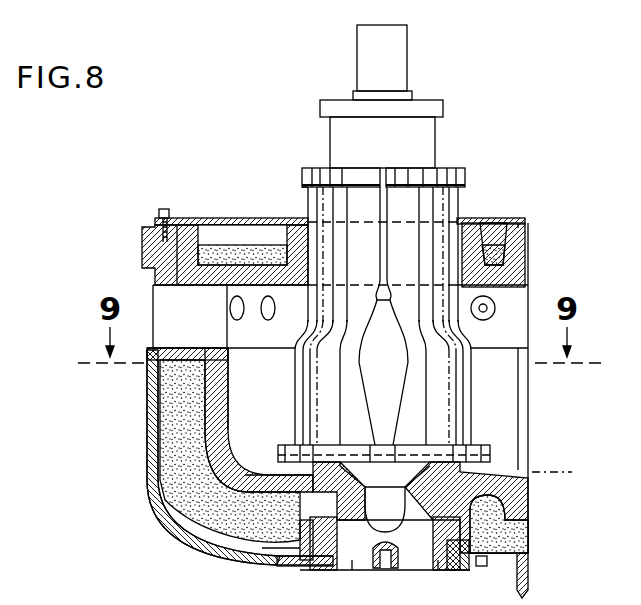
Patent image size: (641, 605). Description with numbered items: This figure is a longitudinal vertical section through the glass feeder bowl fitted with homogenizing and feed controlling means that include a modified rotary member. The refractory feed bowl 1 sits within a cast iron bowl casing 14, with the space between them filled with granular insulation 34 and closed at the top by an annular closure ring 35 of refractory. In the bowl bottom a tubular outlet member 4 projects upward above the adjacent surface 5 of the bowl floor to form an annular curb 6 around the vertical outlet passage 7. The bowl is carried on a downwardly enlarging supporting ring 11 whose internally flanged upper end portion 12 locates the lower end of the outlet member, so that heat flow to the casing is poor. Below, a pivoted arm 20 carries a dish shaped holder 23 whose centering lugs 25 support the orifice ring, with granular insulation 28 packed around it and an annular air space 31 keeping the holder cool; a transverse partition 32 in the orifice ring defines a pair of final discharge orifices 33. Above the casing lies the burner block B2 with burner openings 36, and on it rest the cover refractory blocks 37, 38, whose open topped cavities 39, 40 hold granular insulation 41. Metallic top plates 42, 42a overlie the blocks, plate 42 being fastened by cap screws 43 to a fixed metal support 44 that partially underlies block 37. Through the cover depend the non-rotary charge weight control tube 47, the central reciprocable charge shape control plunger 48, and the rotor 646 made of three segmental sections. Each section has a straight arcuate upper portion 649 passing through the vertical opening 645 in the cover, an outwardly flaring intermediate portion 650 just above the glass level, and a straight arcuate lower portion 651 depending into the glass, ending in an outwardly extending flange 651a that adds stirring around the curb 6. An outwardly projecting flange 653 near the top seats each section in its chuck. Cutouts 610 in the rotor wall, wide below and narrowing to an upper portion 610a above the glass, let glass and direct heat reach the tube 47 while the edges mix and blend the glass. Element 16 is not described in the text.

The feed bowl 1 is at (221, 416).
The tubular outlet member 4 is at (343, 470).
The adjacent surface of the feed bowl bottom 5 is at (258, 474).
The annular curb 6 is at (505, 472).
The vertical outlet passage 7 is at (432, 500).
The supporting ring 11 is at (288, 552).
The internally flanged upper end portion 12 is at (326, 510).
The bowl casing 14 is at (150, 446).
The mounting plate 16 is at (516, 582).
The arm 20 is at (262, 560).
The dish shaped holder 23 is at (317, 566).
The centering lugs 25 is at (446, 552).
The granular insulation 28 is at (326, 533).
The annular air space 31 is at (436, 532).
The transverse partition 32 is at (385, 572).
The final discharge orifices 33 is at (352, 572).
The granular insulation 34 is at (196, 396).
The annular closure ring 35 is at (206, 356).
The burner openings 36 is at (232, 306).
The refractory block 37 is at (281, 308).
The refractory block 38 is at (518, 255).
The open topped cavity 39 is at (208, 218).
The open topped cavity 40 is at (500, 222).
The granular insulation 41 is at (258, 240).
The metallic top plate 42 is at (182, 216).
The metallic top plate 42a is at (518, 222).
The cap screws 43 is at (158, 214).
The metal support 44 is at (142, 246).
The charge weight control tube 47 is at (428, 128).
The charge shape control plunger 48 is at (406, 56).
The burner block B2 is at (152, 312).
The cutouts 610 is at (369, 402).
The upper portion of the cutout 610a is at (378, 296).
The vertical opening 645 is at (312, 244).
The rotor 646 is at (488, 172).
The upper portion 649 is at (445, 212).
The flaring intermediate portion 650 is at (478, 330).
The lower portion 651 is at (448, 404).
The flange 651a is at (493, 452).
The flange 653 is at (303, 180).